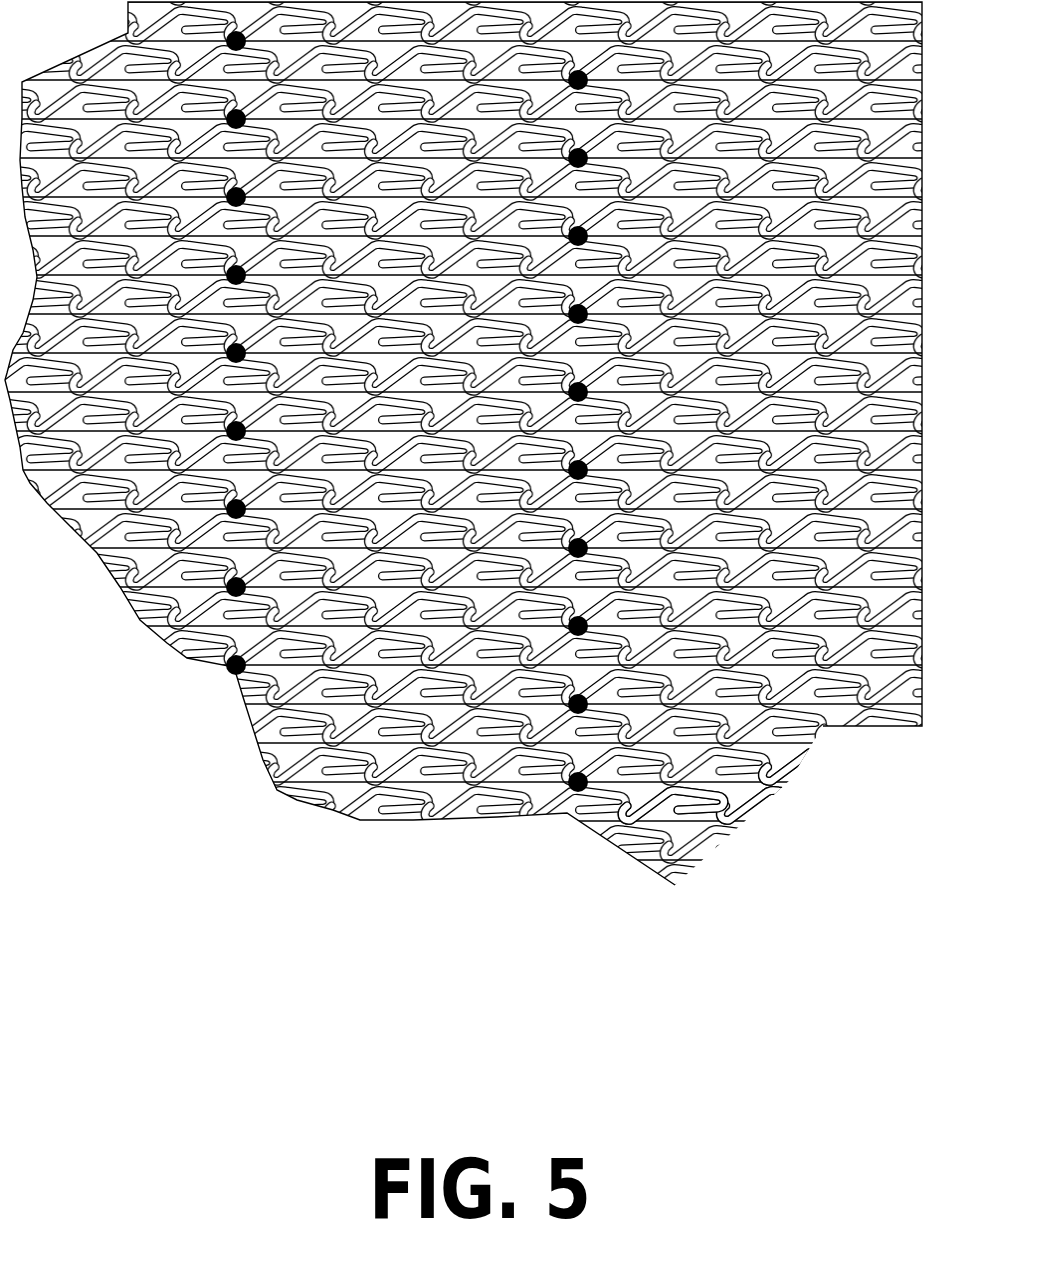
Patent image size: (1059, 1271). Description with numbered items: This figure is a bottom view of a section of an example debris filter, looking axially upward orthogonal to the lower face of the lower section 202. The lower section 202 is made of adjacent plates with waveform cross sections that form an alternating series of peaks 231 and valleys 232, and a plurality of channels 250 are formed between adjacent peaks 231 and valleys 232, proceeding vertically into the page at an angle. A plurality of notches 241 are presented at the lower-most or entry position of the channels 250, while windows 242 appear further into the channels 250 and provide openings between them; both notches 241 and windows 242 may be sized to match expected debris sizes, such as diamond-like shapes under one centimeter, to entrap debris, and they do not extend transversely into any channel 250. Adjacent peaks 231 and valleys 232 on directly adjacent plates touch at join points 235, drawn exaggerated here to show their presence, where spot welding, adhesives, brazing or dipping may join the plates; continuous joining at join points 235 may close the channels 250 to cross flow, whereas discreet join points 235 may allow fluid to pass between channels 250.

The lower section 202 is at (230, 617).
The peak 231 is at (480, 784).
The valley 232 is at (477, 782).
The join point 235 is at (233, 664).
The notch 241 is at (780, 752).
The window 242 is at (702, 800).
The channel 250 is at (380, 743).